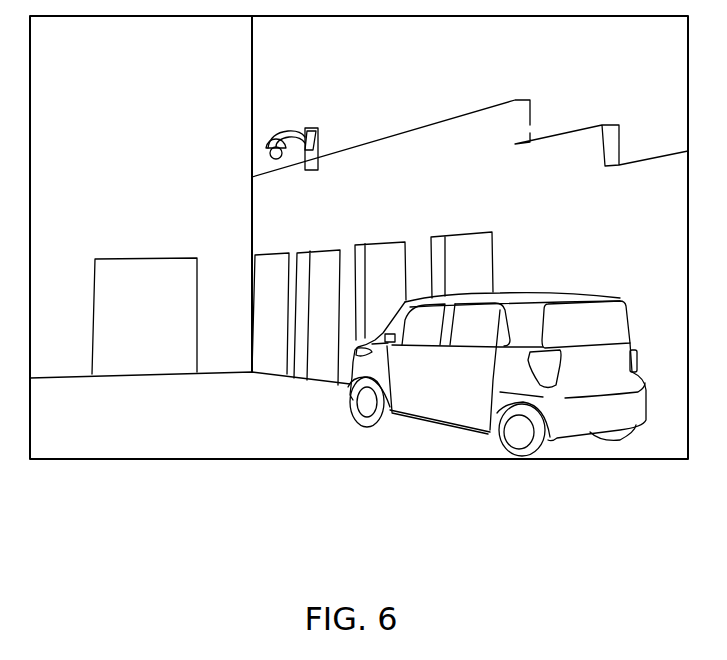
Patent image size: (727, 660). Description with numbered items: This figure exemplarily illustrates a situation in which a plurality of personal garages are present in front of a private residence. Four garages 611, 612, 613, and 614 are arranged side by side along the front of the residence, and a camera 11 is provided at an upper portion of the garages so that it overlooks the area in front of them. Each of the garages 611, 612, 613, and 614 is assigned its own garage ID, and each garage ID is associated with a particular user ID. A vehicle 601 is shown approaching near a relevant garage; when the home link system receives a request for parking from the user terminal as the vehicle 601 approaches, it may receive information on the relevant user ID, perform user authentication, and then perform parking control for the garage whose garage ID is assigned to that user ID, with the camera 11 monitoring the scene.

The camera 11 is at (312, 128).
The vehicle 601 is at (511, 452).
The garage 611 is at (148, 362).
The garage 612 is at (268, 360).
The garage 613 is at (330, 364).
The garage 614 is at (386, 265).